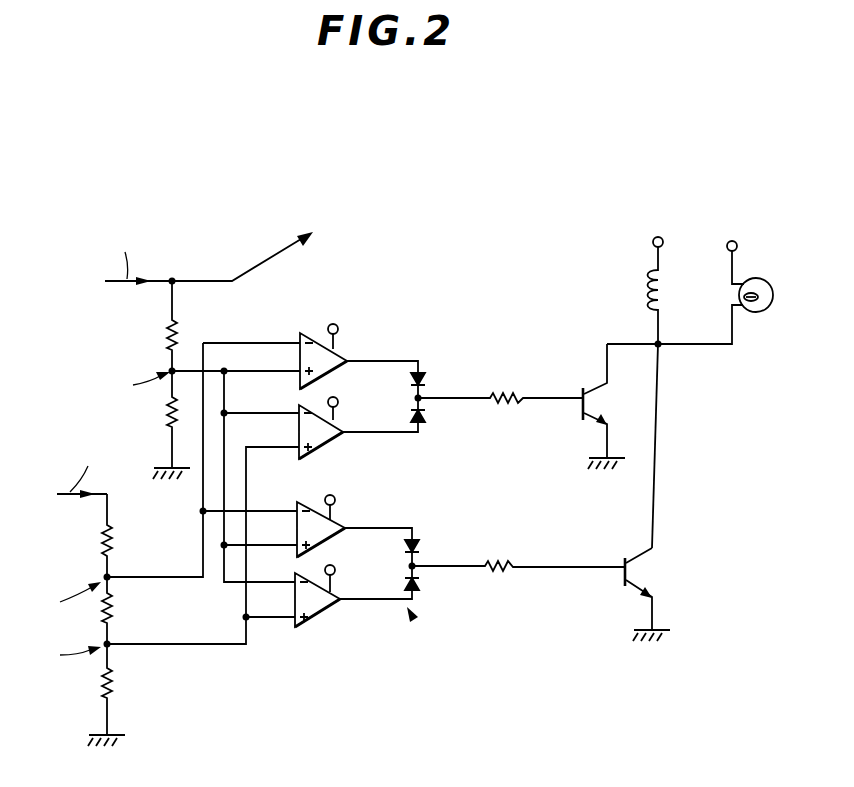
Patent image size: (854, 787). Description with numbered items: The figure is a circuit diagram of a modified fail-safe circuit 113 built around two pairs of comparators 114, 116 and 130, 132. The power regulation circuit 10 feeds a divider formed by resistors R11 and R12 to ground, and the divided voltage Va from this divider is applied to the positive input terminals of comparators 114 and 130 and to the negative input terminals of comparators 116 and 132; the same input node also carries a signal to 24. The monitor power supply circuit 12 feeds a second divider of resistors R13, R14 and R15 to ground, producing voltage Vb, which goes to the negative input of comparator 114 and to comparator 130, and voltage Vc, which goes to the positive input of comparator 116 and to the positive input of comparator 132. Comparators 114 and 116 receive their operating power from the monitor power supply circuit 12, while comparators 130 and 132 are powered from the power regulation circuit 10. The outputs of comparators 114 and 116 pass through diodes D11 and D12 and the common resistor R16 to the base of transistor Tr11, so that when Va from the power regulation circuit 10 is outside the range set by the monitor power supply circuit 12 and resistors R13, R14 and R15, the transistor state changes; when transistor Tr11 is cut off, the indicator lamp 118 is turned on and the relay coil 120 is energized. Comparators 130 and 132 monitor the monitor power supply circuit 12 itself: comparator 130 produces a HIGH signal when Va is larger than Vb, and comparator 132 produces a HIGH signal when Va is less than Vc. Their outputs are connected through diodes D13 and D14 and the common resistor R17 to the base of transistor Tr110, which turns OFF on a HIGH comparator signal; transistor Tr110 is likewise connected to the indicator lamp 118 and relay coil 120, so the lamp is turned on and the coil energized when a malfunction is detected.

The power regulation circuit 10 is at (100, 281).
The monitor power supply circuit 12 is at (63, 484).
The output to 24 is at (252, 243).
The comparator 114 is at (348, 367).
The comparator 116 is at (341, 440).
The comparator 130 is at (310, 500).
The comparator 132 is at (335, 620).
The fail-safe circuit 113 is at (411, 616).
The relay coil 120 is at (645, 292).
The indicator lamp 118 is at (738, 287).
The dividing resistor R11 is at (155, 326).
The dividing resistor R12 is at (155, 419).
The dividing resistor R13 is at (124, 535).
The dividing resistor R14 is at (124, 610).
The dividing resistor R15 is at (121, 689).
The common resistor R16 is at (500, 384).
The common resistor R17 is at (518, 551).
The diode D11 is at (424, 378).
The diode D12 is at (424, 418).
The diode D13 is at (419, 547).
The diode D14 is at (419, 585).
The transistor Tr11 is at (592, 400).
The transistor Tr110 is at (640, 570).